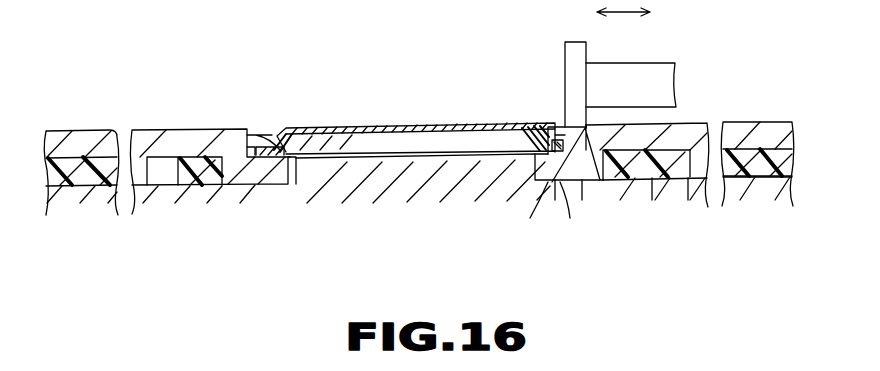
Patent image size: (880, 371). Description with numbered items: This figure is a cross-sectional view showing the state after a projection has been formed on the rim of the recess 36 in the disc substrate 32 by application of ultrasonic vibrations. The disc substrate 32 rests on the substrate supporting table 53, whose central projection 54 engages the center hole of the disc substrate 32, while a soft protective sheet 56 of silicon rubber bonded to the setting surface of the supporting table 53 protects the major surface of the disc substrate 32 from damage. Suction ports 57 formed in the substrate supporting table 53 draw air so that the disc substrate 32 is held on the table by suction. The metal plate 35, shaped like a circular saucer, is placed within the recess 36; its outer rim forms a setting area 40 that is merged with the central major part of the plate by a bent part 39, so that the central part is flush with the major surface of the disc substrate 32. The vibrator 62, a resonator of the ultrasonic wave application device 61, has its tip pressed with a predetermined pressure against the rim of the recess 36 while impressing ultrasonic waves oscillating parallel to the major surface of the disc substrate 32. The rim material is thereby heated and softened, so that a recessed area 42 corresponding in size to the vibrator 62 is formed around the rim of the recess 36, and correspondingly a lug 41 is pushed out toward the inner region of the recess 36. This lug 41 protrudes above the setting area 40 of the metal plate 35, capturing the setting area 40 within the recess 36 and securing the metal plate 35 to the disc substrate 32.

The disc substrate 32 is at (686, 120).
The metal plate 35 is at (385, 125).
The recess 36 is at (298, 160).
The bent part 39 is at (278, 128).
The setting area 40 is at (553, 130).
The lug 41 is at (545, 184).
The recessed area 42 is at (606, 186).
The substrate supporting table 53 is at (782, 202).
The central projection 54 is at (455, 128).
The protective sheet 56 is at (790, 162).
The suction ports 57 is at (558, 192).
The ultrasonic wave application device 61 is at (660, 68).
The vibrator 62 is at (575, 44).